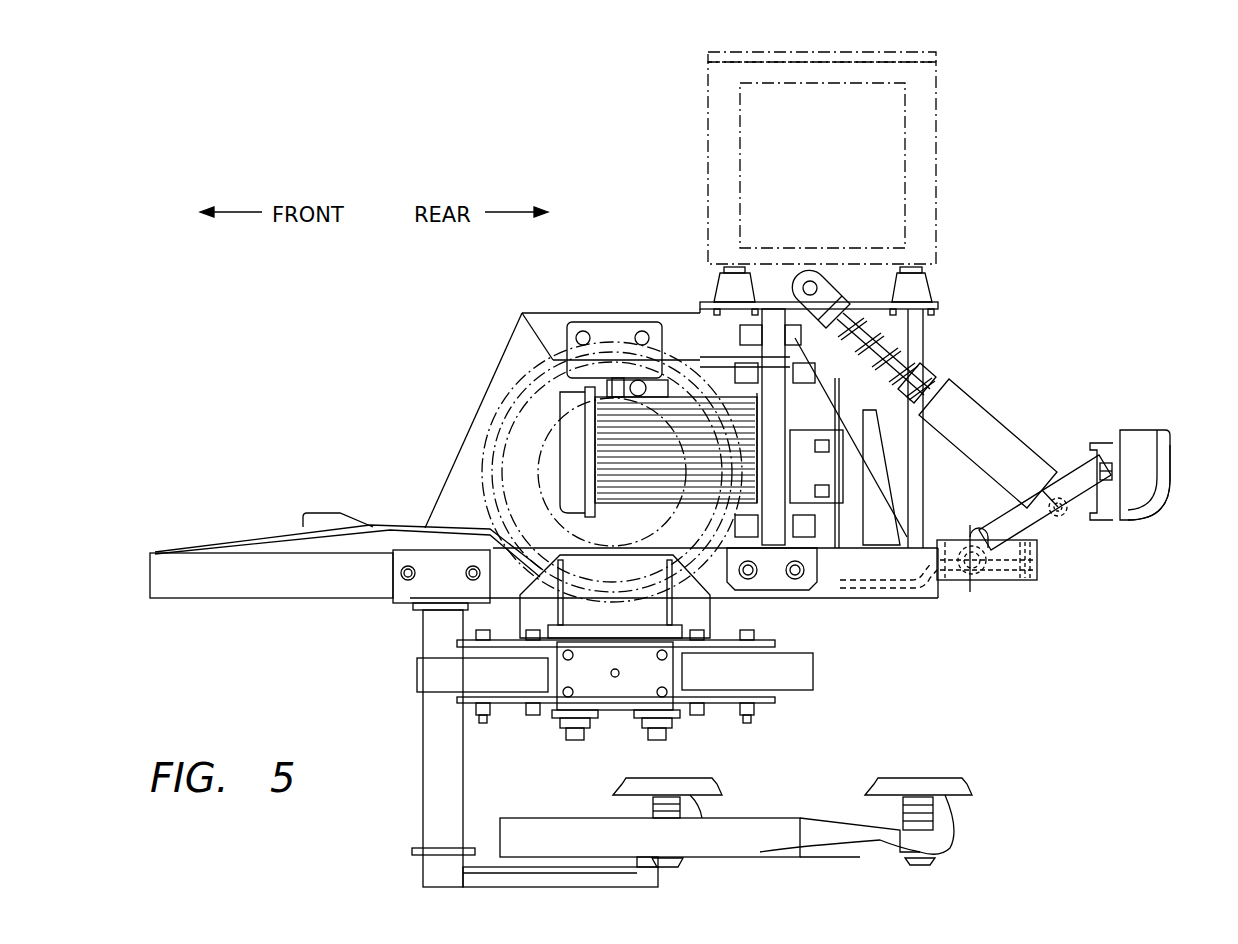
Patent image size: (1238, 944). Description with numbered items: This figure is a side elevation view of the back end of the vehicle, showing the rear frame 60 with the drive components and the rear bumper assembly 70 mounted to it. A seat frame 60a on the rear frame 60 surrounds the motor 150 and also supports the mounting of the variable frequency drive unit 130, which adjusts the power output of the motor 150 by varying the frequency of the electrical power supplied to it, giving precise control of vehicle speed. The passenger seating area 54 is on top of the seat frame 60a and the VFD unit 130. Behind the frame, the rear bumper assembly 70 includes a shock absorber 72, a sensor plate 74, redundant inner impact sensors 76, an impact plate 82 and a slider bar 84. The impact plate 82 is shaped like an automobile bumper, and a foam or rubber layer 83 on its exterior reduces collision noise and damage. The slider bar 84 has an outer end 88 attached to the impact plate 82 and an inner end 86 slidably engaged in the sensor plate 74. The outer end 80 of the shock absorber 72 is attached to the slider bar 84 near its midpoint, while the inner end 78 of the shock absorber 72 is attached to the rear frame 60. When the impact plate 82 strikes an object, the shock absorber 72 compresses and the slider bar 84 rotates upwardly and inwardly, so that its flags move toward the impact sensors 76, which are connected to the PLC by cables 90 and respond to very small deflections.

The passenger seating area 54 is at (658, 236).
The rear frame 60 is at (245, 586).
The seat frame 60a is at (528, 345).
The rear bumper assembly 70 is at (1010, 386).
The shock absorber 72 is at (1007, 445).
The sensor plate 74 is at (1020, 577).
The inner impact sensors 76 is at (1061, 573).
The inner end of shock absorber 78 is at (806, 280).
The outer end of shock absorber 80 is at (1055, 525).
The impact plate 82 is at (1158, 446).
The foam or rubber layer 83 is at (1170, 468).
The slider bar 84 is at (1033, 527).
The inner end of slider bar 86 is at (998, 577).
The outer end of slider bar 88 is at (962, 540).
The cables 90 is at (880, 595).
The variable frequency drive unit 130 is at (888, 121).
The motor 150 is at (600, 440).